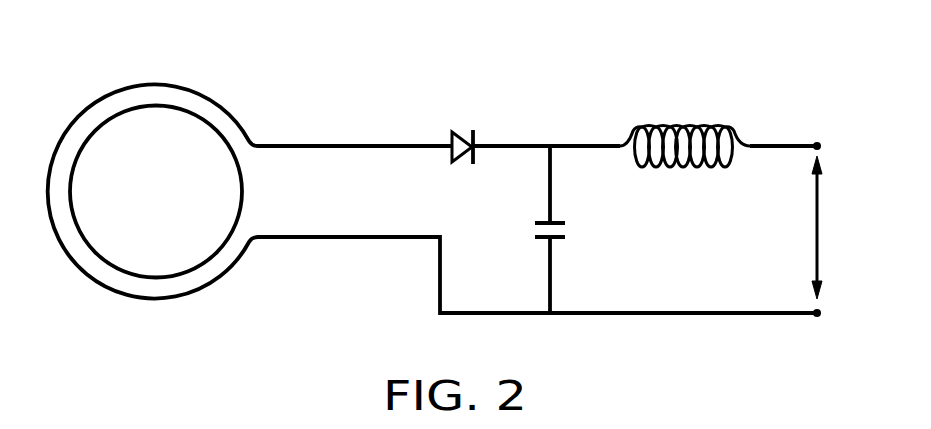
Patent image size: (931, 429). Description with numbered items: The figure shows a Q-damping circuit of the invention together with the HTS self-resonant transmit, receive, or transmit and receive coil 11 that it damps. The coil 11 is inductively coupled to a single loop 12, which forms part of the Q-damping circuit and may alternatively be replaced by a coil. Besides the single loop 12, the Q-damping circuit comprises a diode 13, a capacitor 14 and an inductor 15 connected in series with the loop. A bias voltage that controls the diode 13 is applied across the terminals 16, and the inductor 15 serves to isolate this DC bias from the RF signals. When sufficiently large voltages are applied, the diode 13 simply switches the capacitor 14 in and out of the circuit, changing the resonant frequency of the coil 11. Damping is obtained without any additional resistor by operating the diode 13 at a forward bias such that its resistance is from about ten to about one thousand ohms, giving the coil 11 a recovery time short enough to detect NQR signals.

The HTS self-resonant coil 11 is at (143, 105).
The single loop 12 is at (217, 100).
The diode 13 is at (457, 133).
The capacitor 14 is at (560, 220).
The inductor 15 is at (685, 127).
The terminals 16 is at (817, 244).